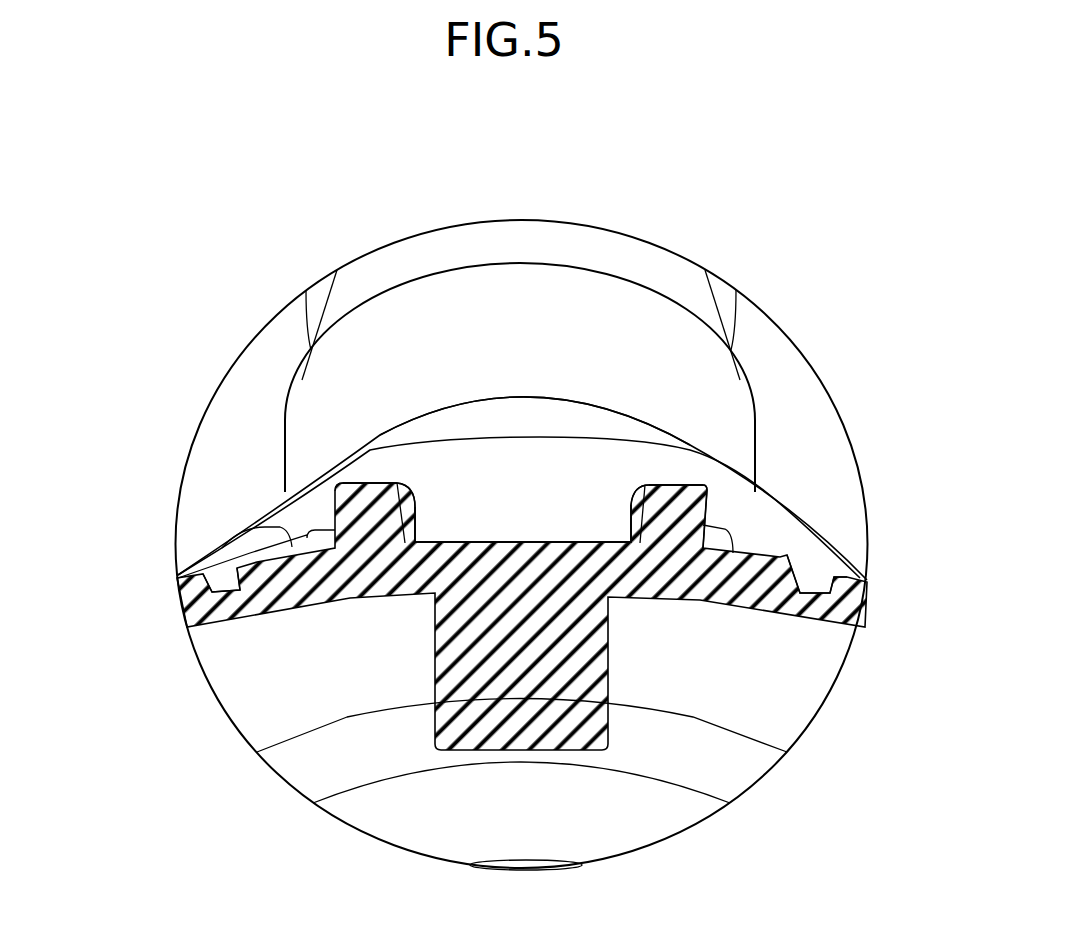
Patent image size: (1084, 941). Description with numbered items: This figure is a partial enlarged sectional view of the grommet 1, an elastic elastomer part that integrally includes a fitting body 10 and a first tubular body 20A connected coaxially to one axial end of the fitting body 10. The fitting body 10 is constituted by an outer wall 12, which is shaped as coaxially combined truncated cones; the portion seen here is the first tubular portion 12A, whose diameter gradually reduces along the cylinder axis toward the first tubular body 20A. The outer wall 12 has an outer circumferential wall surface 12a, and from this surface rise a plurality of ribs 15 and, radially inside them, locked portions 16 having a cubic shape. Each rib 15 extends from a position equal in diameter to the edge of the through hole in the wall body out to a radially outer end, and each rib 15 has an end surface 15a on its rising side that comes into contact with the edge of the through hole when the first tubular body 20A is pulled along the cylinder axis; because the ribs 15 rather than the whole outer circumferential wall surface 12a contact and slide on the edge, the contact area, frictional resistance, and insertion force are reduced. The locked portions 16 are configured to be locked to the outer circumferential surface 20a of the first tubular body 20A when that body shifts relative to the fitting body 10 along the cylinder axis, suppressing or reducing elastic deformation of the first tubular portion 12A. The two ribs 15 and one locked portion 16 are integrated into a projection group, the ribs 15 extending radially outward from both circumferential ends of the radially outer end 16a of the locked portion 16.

The grommet 1 is at (717, 139).
The fitting body 10 is at (284, 838).
The outer wall 12 is at (474, 616).
The outer circumferential wall surface 12a is at (258, 562).
The first tubular portion 12A is at (895, 596).
The ribs 15 is at (412, 512).
The end surface 15a is at (363, 483).
The locked portions 16 is at (523, 331).
The radially outer end 16a is at (558, 517).
The first tubular body 20A is at (347, 233).
The outer circumferential surface 20a is at (640, 437).